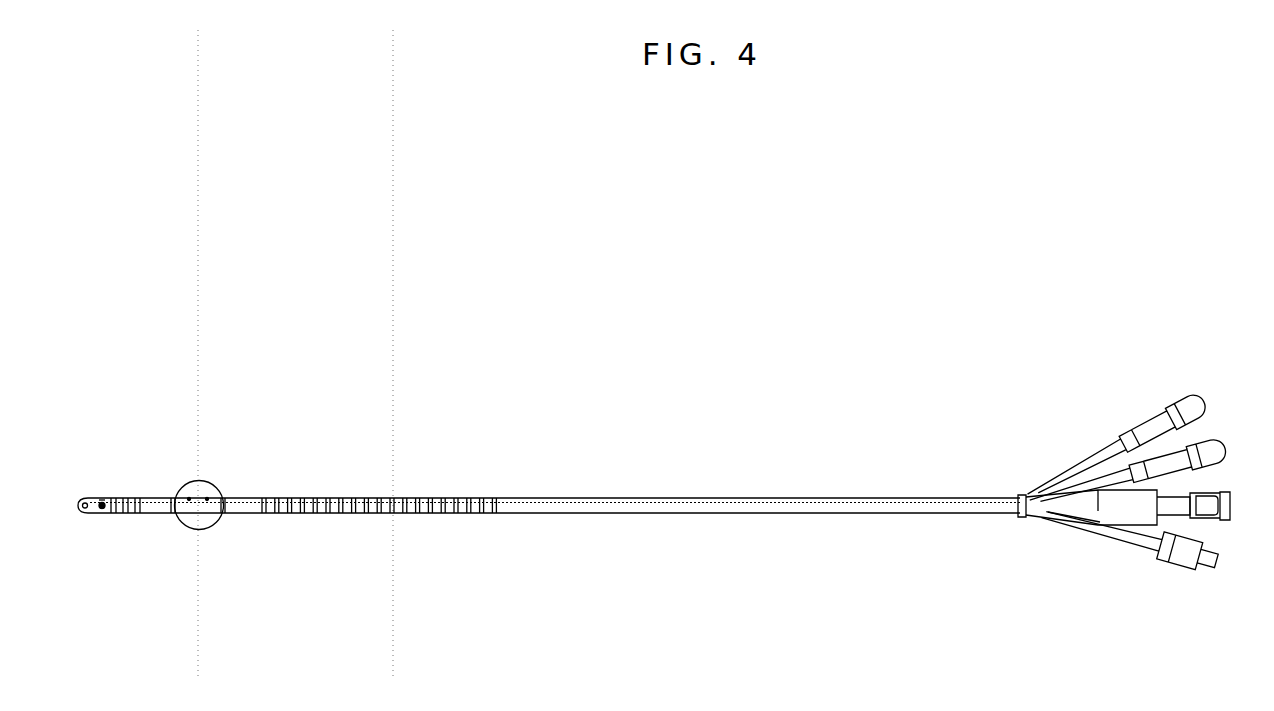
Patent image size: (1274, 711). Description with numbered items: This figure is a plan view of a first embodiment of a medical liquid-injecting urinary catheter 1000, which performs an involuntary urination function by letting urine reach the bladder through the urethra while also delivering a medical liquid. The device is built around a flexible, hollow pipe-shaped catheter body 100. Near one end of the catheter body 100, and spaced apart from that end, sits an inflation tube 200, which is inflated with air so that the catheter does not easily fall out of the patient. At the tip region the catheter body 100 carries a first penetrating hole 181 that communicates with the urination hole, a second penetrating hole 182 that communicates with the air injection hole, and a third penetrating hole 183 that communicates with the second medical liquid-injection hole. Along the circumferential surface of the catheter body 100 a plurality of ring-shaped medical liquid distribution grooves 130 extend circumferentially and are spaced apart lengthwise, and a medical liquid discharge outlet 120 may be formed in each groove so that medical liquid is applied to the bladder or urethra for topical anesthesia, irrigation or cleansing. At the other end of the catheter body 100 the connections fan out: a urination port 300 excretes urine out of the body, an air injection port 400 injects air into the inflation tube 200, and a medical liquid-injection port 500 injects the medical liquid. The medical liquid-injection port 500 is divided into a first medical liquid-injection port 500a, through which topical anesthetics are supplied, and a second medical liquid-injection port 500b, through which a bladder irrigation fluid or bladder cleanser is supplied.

The medical liquid-injecting urinary catheter 1000 is at (893, 398).
The catheter body 100 is at (688, 497).
The medical liquid discharge outlets 120 is at (443, 513).
The ring-shaped medical liquid distribution grooves 130 is at (436, 498).
The first penetrating hole 181 is at (94, 515).
The second penetrating hole 182 is at (188, 499).
The third penetrating hole 183 is at (99, 502).
The inflation tube 200 is at (210, 484).
The urination port 300 is at (1211, 512).
The air injection port 400 is at (1183, 558).
The medical liquid-injection port 500 is at (1134, 396).
The first medical liquid-injection port 500a is at (1197, 396).
The second medical liquid-injection port 500b is at (1160, 462).